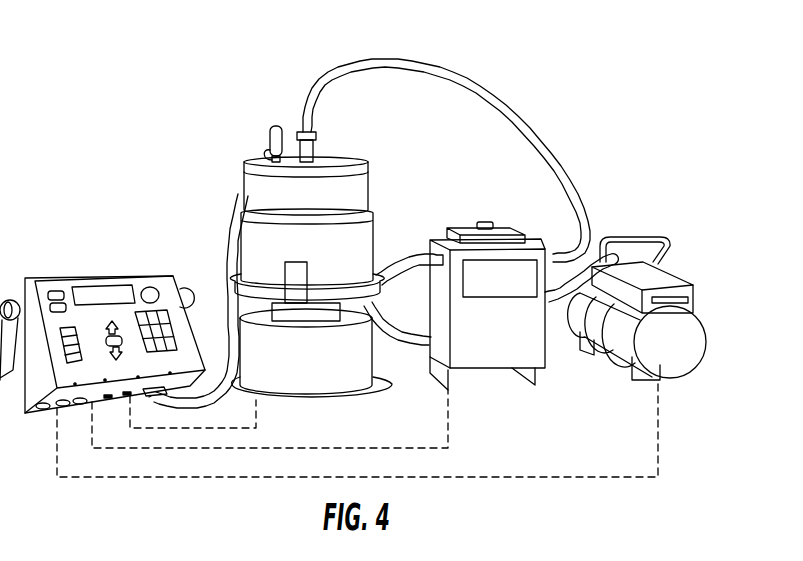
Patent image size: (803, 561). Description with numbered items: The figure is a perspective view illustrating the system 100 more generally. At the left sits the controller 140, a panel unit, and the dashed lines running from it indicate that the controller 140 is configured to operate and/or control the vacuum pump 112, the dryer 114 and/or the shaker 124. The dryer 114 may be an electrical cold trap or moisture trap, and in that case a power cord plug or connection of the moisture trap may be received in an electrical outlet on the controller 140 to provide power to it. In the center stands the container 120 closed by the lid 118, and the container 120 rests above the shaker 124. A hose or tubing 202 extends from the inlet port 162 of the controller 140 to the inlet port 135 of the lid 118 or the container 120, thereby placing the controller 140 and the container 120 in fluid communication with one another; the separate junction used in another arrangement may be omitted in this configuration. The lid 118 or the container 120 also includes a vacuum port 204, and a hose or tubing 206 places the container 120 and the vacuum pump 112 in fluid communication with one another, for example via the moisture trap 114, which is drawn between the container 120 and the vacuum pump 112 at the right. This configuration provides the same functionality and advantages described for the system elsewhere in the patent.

The system 100 is at (157, 46).
The vacuum pump 112 is at (630, 217).
The dryer 114 is at (475, 208).
The lid 118 is at (366, 166).
The container 120 is at (224, 176).
The shaker 124 is at (359, 403).
The inlet port 135 is at (263, 160).
The controller 140 is at (34, 265).
The inlet port 162 is at (150, 397).
The hose or tubing 202 is at (176, 406).
The vacuum port 204 is at (313, 148).
The hose or tubing 206 is at (488, 102).